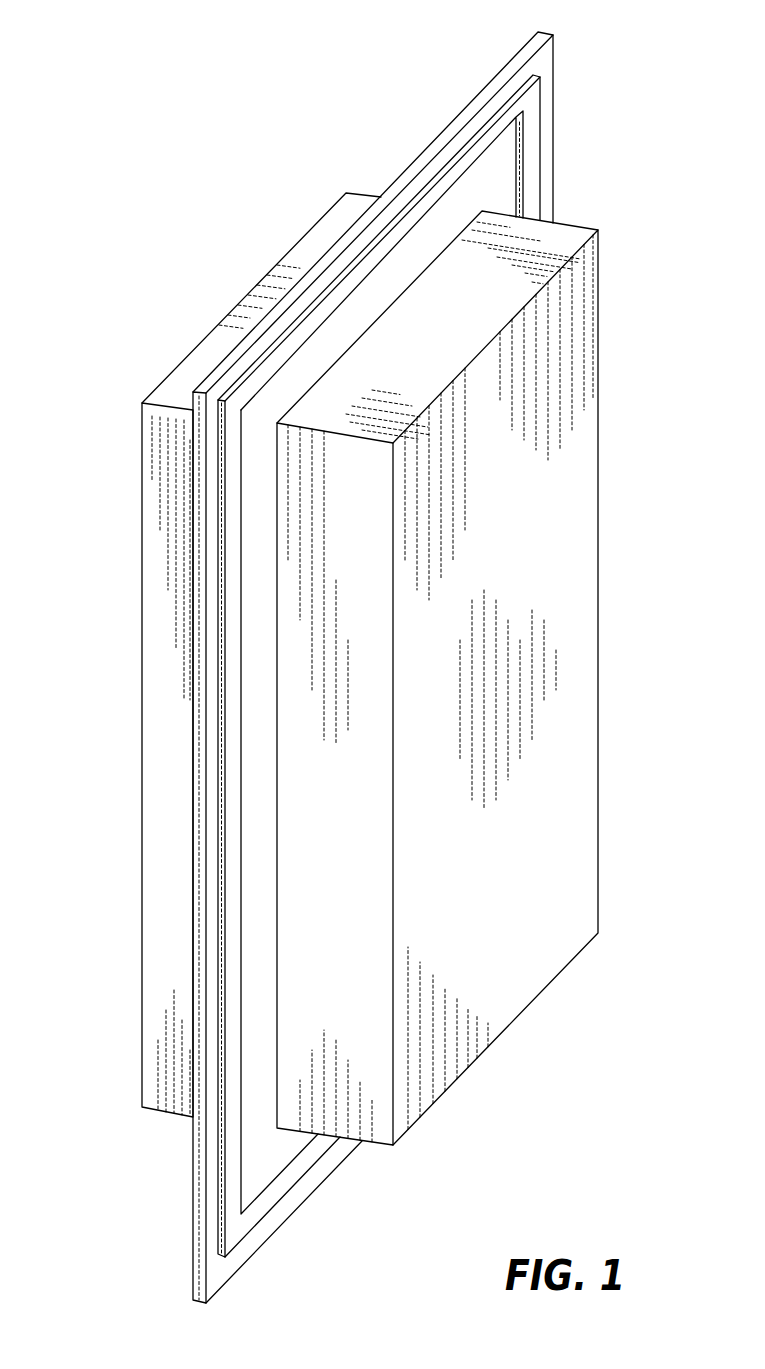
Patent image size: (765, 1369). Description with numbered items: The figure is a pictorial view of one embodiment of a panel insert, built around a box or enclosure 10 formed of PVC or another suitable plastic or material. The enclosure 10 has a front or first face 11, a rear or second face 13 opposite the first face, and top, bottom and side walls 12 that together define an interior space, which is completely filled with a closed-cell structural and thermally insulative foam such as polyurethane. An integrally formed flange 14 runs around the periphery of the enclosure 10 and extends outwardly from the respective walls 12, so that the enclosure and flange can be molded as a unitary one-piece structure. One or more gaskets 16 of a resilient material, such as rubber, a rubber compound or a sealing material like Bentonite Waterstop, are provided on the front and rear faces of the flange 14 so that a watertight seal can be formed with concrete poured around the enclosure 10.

The enclosure 10 is at (645, 545).
The first face 11 is at (533, 743).
The walls 12 is at (553, 242).
The second face 13 is at (142, 623).
The flange 14 is at (443, 140).
The gaskets 16 is at (530, 112).